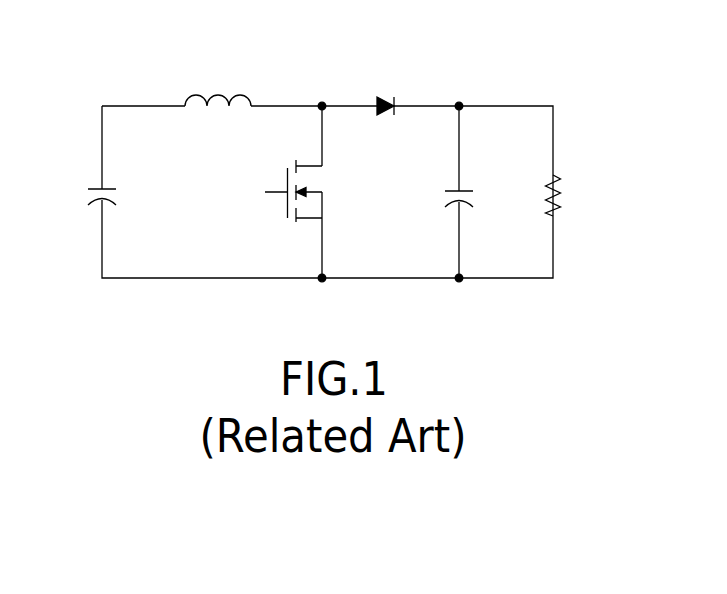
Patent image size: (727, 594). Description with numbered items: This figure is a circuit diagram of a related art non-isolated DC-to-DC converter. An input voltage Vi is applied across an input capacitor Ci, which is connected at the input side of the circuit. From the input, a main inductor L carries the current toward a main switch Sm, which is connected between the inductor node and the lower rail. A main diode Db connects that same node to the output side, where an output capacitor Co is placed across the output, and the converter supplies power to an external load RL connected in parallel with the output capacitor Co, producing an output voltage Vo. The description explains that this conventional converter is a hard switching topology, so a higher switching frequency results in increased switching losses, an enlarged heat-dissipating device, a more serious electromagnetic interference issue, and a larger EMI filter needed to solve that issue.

The main inductor L is at (218, 86).
The input capacitor Ci is at (115, 197).
The input voltage Vi is at (88, 226).
The main switch Sm is at (285, 184).
The main diode Db is at (383, 92).
The output capacitor Co is at (442, 197).
The external load RL is at (536, 195).
The output voltage Vo is at (591, 226).